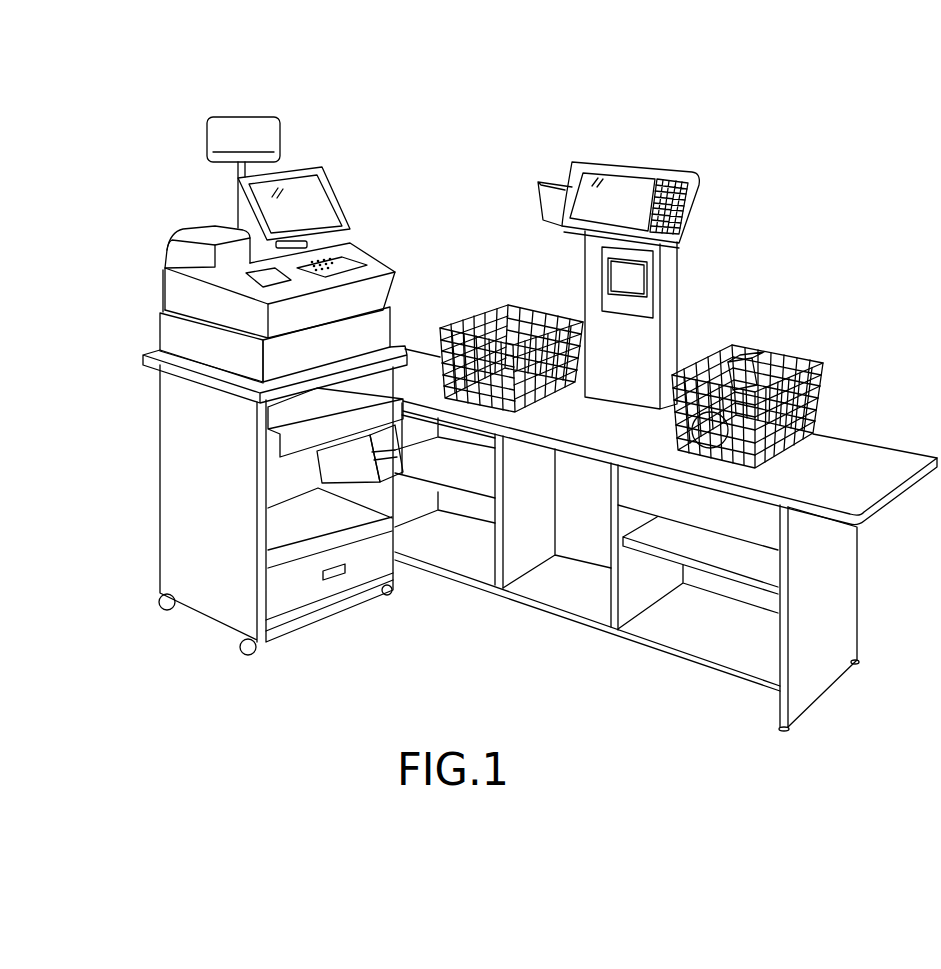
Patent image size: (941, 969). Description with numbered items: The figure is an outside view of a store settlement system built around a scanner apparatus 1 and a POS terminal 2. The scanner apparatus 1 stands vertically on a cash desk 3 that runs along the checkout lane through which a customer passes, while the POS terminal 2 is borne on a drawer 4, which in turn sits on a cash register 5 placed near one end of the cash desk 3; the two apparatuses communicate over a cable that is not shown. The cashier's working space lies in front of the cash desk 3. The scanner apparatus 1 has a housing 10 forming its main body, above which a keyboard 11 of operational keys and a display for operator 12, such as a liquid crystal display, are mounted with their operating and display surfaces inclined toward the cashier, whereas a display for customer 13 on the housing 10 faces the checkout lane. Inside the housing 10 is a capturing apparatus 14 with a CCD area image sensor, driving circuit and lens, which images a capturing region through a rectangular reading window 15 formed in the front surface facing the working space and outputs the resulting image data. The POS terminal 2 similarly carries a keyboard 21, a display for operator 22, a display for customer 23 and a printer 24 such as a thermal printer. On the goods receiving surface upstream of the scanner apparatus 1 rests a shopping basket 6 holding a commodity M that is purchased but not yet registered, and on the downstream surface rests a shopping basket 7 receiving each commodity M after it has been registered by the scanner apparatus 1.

The scanner apparatus 1 is at (712, 247).
The POS terminal 2 is at (345, 166).
The cash desk 3 is at (887, 453).
The drawer 4 is at (177, 337).
The cash register 5 is at (173, 458).
The shopping basket 6 is at (822, 390).
The shopping basket 7 is at (473, 313).
The housing 10 is at (670, 302).
The keyboard 11 is at (675, 175).
The display for operator 12 is at (623, 182).
The display for customer 13 is at (548, 205).
The capturing apparatus 14 is at (620, 282).
The reading window 15 is at (628, 312).
The keyboard 21 is at (353, 260).
The display for operator 22 is at (320, 197).
The display for customer 23 is at (280, 135).
The printer 24 is at (210, 228).
The commodity M is at (750, 358).